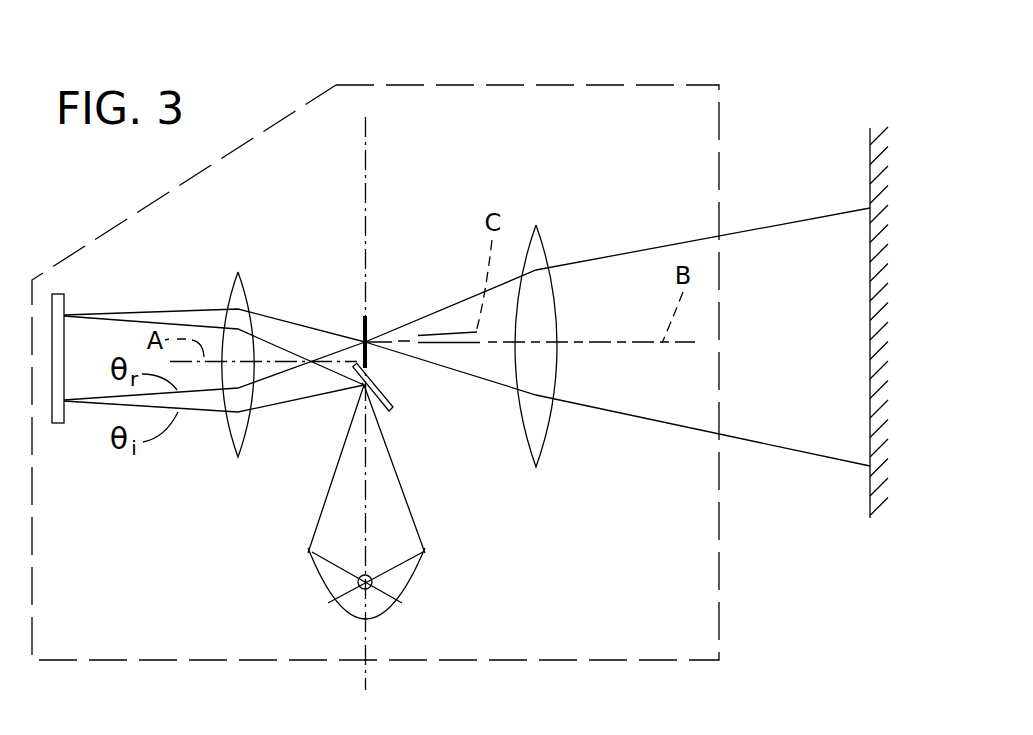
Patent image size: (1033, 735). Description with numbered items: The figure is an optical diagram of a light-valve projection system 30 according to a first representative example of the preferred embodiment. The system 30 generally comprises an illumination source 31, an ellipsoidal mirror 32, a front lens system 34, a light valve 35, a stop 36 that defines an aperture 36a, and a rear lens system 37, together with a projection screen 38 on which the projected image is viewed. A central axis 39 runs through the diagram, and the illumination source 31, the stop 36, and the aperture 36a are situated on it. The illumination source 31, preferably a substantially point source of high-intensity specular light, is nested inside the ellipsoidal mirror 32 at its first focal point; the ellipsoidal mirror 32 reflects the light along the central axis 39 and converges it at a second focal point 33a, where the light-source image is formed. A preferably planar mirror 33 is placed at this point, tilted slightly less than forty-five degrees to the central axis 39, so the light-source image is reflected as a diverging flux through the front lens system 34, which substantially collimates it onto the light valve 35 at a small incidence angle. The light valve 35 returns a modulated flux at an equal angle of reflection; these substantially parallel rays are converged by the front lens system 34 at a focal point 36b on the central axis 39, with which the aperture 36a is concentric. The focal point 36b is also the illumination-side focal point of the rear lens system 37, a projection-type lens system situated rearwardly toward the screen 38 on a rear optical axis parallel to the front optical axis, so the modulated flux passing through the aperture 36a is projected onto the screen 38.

The projection system 30 is at (721, 522).
The illumination source 31 is at (373, 586).
The ellipsoidal mirror 32 is at (318, 580).
The mirror 33 is at (396, 393).
The second focal point 33a is at (363, 389).
The front lens system 34 is at (232, 422).
The light valve 35 is at (65, 348).
The stop 36 is at (368, 324).
The aperture 36a is at (369, 350).
The focal point 36b is at (370, 338).
The rear lens system 37 is at (538, 308).
The projection screen 38 is at (868, 183).
The central axis 39 is at (368, 171).